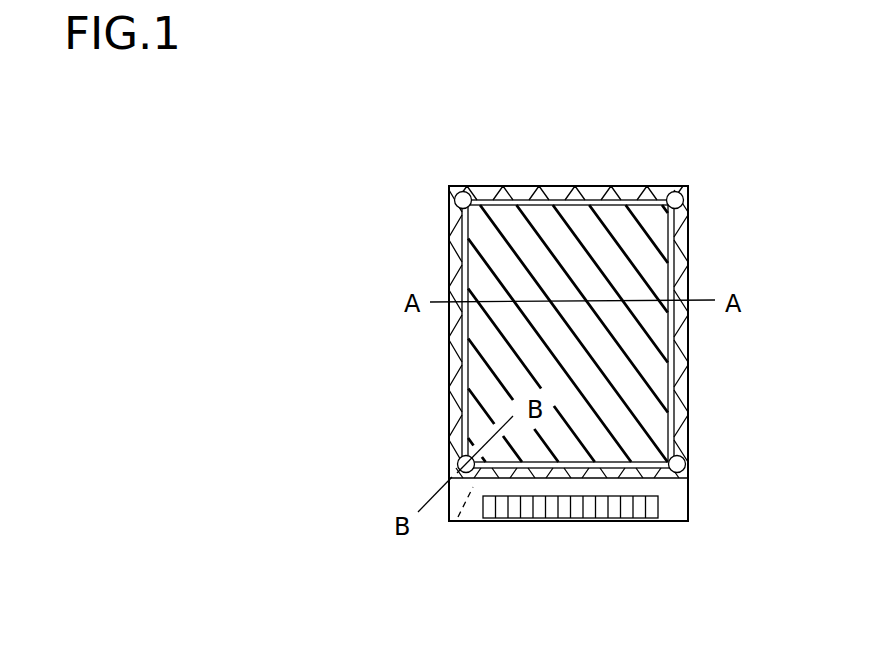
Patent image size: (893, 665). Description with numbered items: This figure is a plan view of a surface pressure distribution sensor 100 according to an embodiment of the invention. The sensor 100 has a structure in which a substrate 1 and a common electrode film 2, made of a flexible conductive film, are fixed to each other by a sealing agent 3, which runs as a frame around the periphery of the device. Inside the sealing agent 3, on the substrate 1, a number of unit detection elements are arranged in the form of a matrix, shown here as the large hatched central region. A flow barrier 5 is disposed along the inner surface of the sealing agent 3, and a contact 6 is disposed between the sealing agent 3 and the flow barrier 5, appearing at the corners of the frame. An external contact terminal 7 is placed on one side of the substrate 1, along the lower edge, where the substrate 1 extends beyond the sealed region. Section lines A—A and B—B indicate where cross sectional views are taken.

The surface pressure distribution sensor 100 is at (682, 160).
The substrate 1 is at (688, 502).
The common electrode film 2 is at (690, 235).
The sealing agent 3 is at (690, 445).
The flow barrier 5 is at (690, 395).
The contact 6 is at (450, 207).
The external contact terminal 7 is at (597, 520).